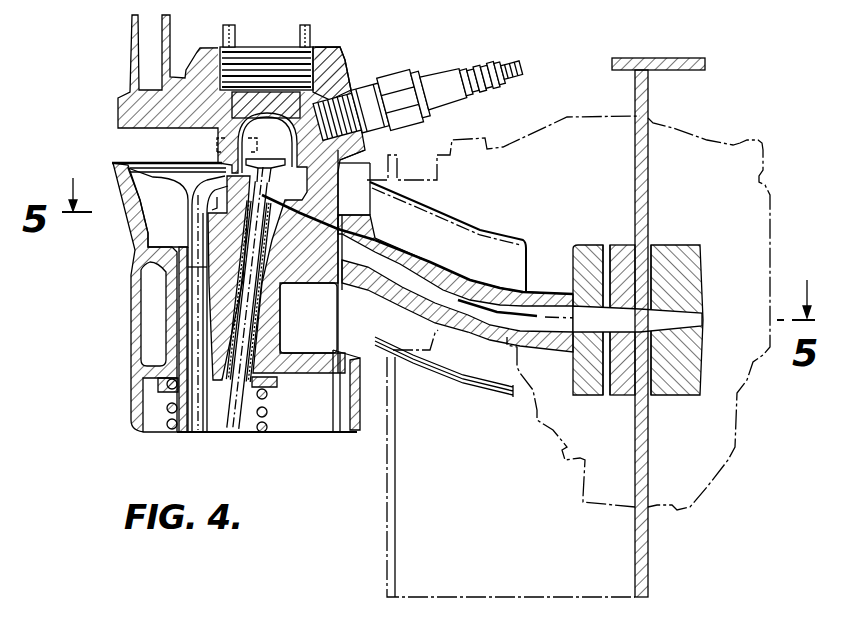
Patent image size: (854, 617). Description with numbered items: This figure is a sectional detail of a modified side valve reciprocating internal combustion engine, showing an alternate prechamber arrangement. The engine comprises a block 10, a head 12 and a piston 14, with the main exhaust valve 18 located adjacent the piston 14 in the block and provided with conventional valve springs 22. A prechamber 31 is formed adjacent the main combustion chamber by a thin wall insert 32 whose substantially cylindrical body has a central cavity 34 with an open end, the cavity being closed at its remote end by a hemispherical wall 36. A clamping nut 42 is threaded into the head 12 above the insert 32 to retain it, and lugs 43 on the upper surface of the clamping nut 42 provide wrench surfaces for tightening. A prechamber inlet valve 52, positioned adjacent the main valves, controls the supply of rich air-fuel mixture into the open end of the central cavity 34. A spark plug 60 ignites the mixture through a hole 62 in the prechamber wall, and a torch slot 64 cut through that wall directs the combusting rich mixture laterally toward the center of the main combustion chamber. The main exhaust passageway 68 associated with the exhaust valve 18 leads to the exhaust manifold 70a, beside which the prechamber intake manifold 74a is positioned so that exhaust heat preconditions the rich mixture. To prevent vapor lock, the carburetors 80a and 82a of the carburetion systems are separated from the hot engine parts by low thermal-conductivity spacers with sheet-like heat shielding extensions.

The block 10 is at (133, 400).
The head 12 is at (130, 105).
The piston 14 is at (135, 140).
The main exhaust valve 18 is at (153, 183).
The valve springs 22 is at (172, 431).
The prechamber 31 is at (233, 145).
The insert 32 is at (250, 100).
The central cavity 34 is at (272, 222).
The hemispherical wall 36 is at (340, 68).
The clamping nut 42 is at (233, 60).
The lugs 43 is at (310, 36).
The prechamber inlet valve 52 is at (240, 433).
The spark plug 60 is at (430, 78).
The hole 62 is at (370, 150).
The torch slot 64 is at (233, 137).
The main exhaust passageway 68 is at (157, 212).
The exhaust manifold 70a is at (483, 233).
The prechamber intake manifold 74a is at (442, 290).
The carburetor 80a is at (573, 140).
The carburetor 82a is at (683, 316).